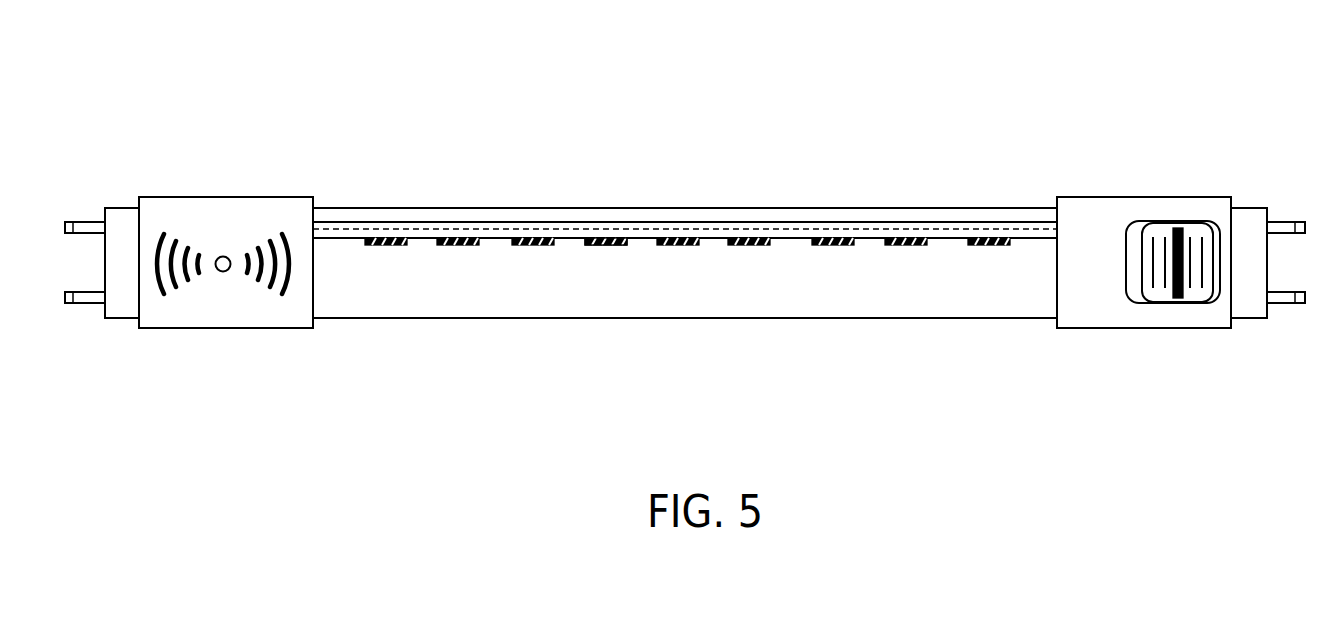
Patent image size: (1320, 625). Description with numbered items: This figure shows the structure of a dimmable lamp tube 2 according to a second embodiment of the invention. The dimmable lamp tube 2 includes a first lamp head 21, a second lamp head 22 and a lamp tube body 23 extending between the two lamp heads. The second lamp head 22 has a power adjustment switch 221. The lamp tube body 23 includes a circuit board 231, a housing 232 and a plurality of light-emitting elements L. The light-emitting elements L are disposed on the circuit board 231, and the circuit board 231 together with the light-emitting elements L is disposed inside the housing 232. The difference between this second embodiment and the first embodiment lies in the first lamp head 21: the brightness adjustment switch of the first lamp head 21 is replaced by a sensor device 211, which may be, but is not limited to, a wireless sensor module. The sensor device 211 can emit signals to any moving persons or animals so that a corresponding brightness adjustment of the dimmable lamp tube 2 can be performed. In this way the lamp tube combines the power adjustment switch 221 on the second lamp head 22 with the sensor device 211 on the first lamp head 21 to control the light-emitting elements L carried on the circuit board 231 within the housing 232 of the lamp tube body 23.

The dimmable lamp tube 2 is at (405, 150).
The first lamp head 21 is at (259, 205).
The sensor device 211 is at (223, 256).
The second lamp head 22 is at (1195, 207).
The power adjustment switch 221 is at (1165, 228).
The lamp tube body 23 is at (788, 262).
The circuit board 231 is at (542, 230).
The housing 232 is at (707, 207).
The light-emitting elements L is at (606, 238).